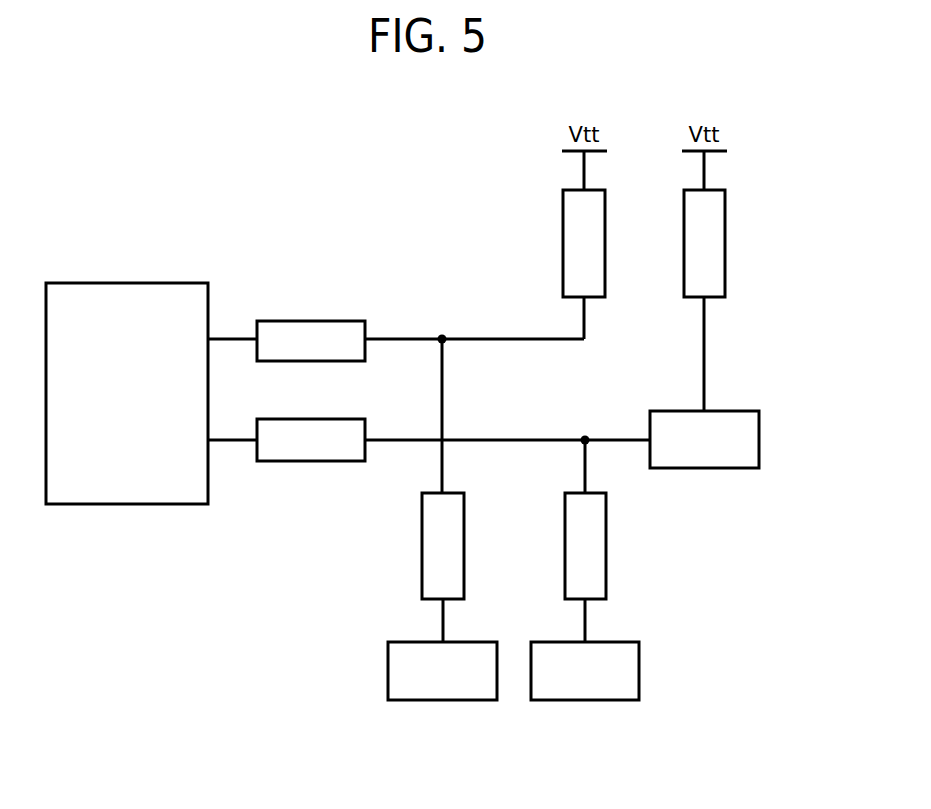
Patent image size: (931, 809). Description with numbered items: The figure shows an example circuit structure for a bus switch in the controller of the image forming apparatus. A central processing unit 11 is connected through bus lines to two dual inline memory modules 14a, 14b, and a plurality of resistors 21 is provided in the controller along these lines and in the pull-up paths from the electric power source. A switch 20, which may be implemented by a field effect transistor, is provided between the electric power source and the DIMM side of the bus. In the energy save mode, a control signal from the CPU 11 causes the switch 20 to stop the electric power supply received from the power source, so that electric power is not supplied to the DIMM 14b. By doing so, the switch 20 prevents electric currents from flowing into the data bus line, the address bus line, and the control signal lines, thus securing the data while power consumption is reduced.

The central processing unit 11 is at (125, 283).
The resistor 21 is at (335, 321).
The switch 20 is at (760, 440).
The dual inline memory module 14a is at (388, 670).
The dual inline memory module 14b is at (640, 670).